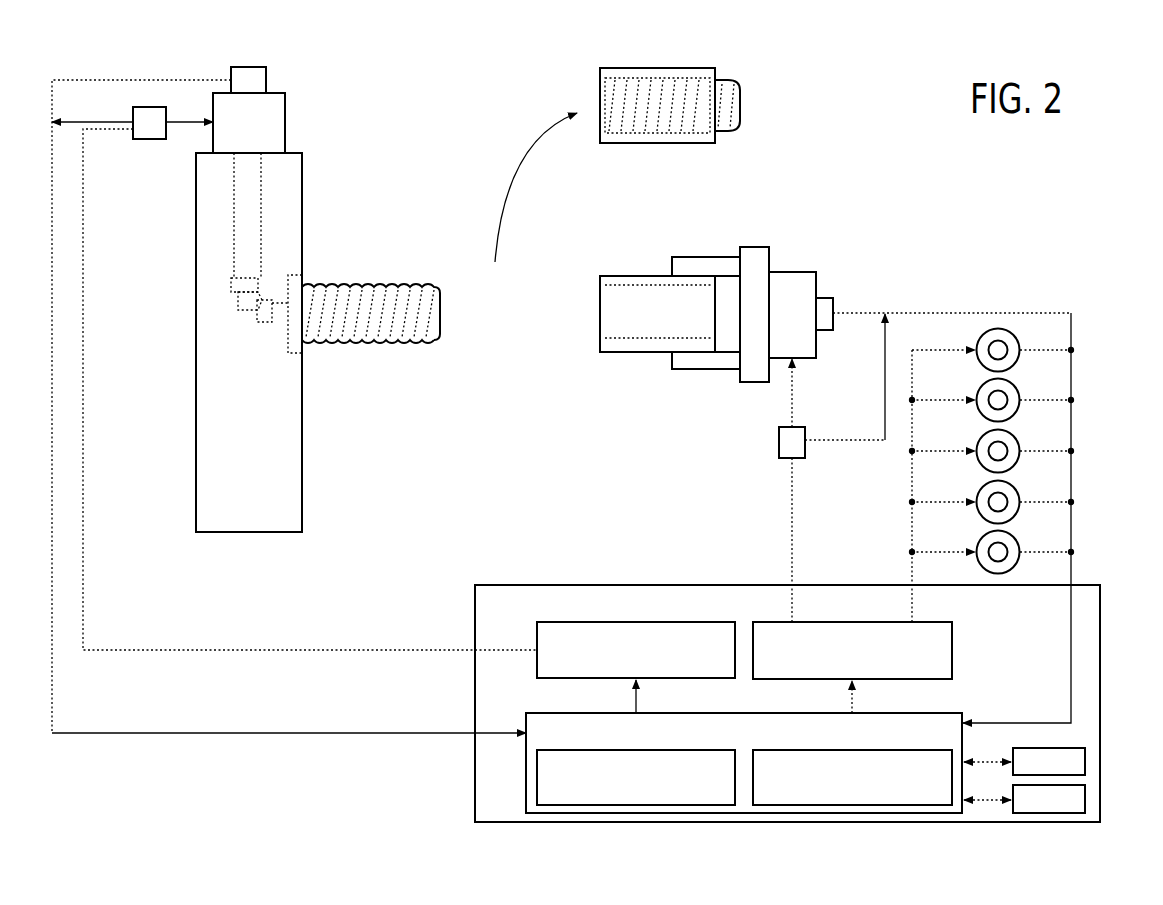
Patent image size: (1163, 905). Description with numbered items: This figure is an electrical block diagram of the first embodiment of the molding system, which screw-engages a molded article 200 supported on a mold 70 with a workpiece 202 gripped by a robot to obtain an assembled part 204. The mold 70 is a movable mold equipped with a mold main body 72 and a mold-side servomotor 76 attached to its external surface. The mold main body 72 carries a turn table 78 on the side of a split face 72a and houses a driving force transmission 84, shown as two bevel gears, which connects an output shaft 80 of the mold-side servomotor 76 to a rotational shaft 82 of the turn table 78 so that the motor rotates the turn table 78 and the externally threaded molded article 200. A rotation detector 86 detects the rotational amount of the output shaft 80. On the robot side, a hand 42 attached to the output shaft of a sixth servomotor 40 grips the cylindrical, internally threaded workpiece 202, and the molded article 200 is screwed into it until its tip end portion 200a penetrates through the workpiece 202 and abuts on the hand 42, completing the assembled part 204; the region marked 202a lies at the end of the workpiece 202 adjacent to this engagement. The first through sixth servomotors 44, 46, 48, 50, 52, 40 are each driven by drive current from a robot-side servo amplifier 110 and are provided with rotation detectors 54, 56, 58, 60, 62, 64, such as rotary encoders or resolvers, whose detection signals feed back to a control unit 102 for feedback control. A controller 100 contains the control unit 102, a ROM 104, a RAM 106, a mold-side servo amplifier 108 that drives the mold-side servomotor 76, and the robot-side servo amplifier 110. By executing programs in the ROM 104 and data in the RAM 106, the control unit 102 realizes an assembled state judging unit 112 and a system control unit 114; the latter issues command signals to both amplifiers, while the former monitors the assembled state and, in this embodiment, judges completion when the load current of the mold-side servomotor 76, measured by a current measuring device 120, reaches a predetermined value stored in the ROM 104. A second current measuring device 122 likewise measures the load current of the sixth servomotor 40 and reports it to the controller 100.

The sixth servomotor 40 is at (817, 282).
The hand 42 is at (762, 257).
The first servomotor 44 is at (979, 545).
The second servomotor 46 is at (979, 494).
The third servomotor 48 is at (979, 443).
The fourth servomotor 50 is at (979, 392).
The fifth servomotor 52 is at (979, 342).
The rotation detector 54 is at (1006, 546).
The rotation detector 56 is at (1006, 495).
The rotation detector 58 is at (1006, 444).
The rotation detector 60 is at (1006, 393).
The rotation detector 62 is at (1006, 343).
The rotation detector 64 is at (834, 315).
The mold 70 is at (244, 326).
The mold main body 72 is at (256, 533).
The split face 72a is at (303, 443).
The mold-side servomotor 76 is at (286, 123).
The turn table 78 is at (290, 275).
The output shaft 80 is at (234, 232).
The rotational shaft 82 is at (275, 322).
The driving force transmission 84 is at (250, 307).
The rotation detector 86 is at (267, 80).
The controller 100 is at (517, 583).
The control unit 102 is at (542, 713).
The ROM 104 is at (1087, 753).
The RAM 106 is at (1087, 793).
The mold-side servo amplifier 108 is at (700, 620).
The robot-side servo amplifier 110 is at (933, 621).
The assembled state judging unit 112 is at (693, 749).
The system control unit 114 is at (865, 750).
The current measuring device 120 is at (146, 140).
The current measuring device 122 is at (778, 441).
The molded article 200 is at (375, 285).
The tip end portion 200a is at (442, 323).
The workpiece 202 is at (653, 145).
The nut end face 202a is at (716, 70).
The assembled part 204 is at (699, 242).